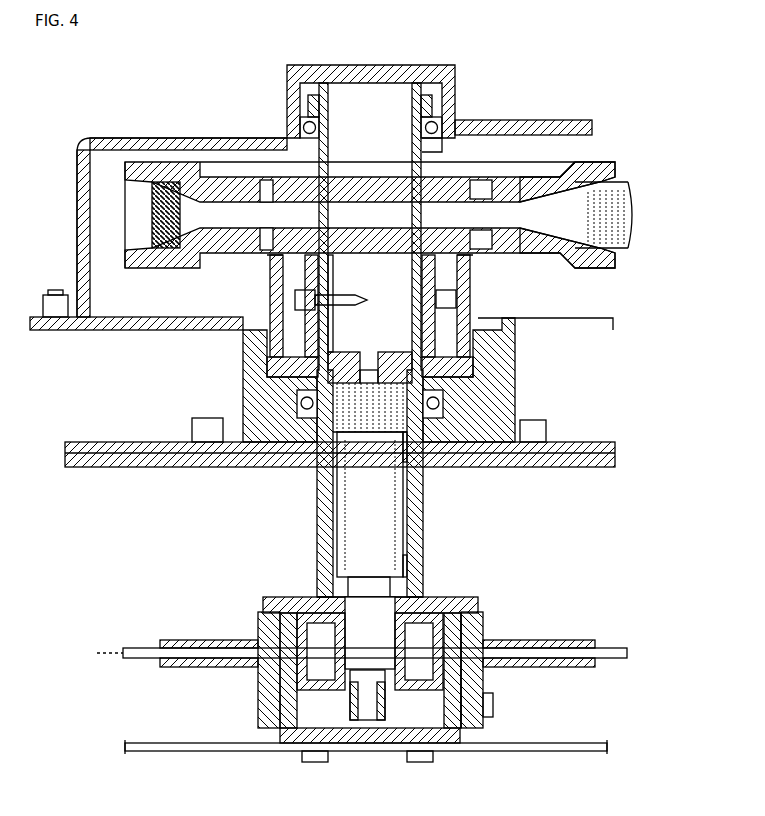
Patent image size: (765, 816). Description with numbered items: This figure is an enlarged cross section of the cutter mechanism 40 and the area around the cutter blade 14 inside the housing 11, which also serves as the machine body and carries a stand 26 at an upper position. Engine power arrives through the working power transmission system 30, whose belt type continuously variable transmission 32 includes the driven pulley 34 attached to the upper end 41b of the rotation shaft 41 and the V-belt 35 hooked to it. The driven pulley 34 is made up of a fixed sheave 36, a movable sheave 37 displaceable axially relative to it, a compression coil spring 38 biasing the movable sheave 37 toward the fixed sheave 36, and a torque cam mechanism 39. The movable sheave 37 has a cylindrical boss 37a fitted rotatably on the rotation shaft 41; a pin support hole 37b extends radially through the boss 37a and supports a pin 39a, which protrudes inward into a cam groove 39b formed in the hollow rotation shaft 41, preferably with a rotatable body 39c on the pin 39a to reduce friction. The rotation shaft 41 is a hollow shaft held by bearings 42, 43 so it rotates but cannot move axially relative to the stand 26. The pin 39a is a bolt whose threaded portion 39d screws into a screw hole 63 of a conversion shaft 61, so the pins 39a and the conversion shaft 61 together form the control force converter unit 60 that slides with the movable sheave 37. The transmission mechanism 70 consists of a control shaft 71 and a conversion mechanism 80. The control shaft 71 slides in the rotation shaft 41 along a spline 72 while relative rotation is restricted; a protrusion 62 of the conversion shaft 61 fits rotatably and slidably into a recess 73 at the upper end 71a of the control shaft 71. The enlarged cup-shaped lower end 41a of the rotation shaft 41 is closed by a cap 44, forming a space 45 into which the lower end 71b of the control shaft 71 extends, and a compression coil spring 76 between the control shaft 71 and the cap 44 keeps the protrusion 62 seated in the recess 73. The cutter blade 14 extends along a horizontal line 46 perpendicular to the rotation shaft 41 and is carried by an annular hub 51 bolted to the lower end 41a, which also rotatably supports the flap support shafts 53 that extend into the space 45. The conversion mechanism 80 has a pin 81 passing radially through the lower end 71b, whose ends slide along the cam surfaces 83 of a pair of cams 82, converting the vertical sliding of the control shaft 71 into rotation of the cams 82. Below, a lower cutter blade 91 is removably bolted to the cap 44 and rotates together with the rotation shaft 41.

The housing 11 is at (100, 444).
The cutter blade 14 is at (172, 667).
The stand 26 is at (160, 138).
The working power transmission system 30 is at (520, 125).
The belt type continuously variable transmission 32 is at (600, 162).
The driven pulley 34 is at (52, 185).
The V-belt 35 is at (152, 210).
The fixed sheave 36 is at (125, 170).
The movable sheave 37 is at (125, 256).
The cylindrical boss 37a is at (440, 290).
The pin support hole 37b is at (300, 300).
The compression coil spring 38 is at (456, 300).
The torque cam mechanism 39 is at (176, 340).
The pin 39a is at (272, 300).
The cam groove 39b is at (290, 367).
The rotatable body 39c is at (355, 356).
The threaded portion 39d is at (340, 292).
The cutter mechanism 40 is at (203, 508).
The rotation shaft 41 is at (318, 512).
The lower end 41a is at (466, 720).
The upper end 41b is at (300, 100).
The bearing 42 is at (300, 125).
The bearing 43 is at (305, 418).
The cap 44 is at (375, 745).
The space 45 is at (423, 752).
The horizontal line 46 is at (488, 648).
The hub 51 is at (493, 690).
The flap support shaft 53 is at (130, 648).
The control force converter unit 60 is at (393, 352).
The conversion shaft 61 is at (372, 352).
The protrusion 62 is at (357, 445).
The screw hole 63 is at (334, 300).
The transmission mechanism 70 is at (244, 530).
The control shaft 71 is at (344, 545).
The upper end 71a is at (410, 445).
The lower end 71b is at (410, 565).
The spline 72 is at (320, 470).
The recess 73 is at (384, 432).
The compression coil spring 76 is at (350, 745).
The conversion mechanism 80 is at (300, 600).
The pin 81 is at (350, 700).
The cam 82 is at (468, 612).
The cam surface 83 is at (425, 614).
The lower cutter blade 91 is at (575, 751).